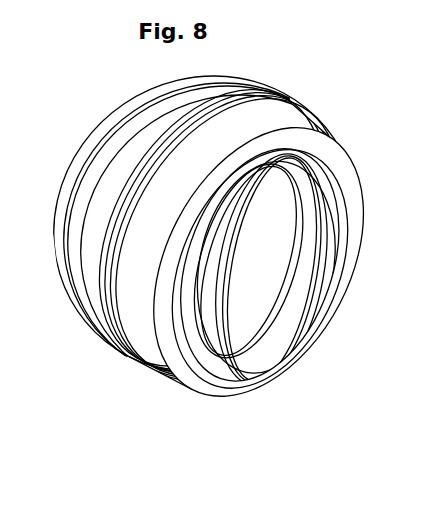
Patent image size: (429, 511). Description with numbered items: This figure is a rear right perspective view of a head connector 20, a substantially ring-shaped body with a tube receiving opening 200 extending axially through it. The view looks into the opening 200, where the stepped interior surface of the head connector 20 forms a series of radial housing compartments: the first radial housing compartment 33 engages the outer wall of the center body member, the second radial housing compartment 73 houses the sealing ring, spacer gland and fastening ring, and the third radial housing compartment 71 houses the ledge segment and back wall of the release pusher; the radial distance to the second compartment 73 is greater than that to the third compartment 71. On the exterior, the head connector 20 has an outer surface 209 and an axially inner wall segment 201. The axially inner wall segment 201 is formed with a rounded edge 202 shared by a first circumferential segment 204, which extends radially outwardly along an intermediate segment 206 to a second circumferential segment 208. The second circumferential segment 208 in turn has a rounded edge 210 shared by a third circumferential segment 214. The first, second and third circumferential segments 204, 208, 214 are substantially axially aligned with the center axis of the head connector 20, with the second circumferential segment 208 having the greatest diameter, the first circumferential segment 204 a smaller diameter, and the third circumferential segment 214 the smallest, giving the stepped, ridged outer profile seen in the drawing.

The head connector 20 is at (302, 74).
The first radial housing compartment 33 is at (323, 300).
The third radial housing compartment 71 is at (230, 230).
The second radial housing compartment 73 is at (275, 245).
The tube receiving opening 200 is at (220, 315).
The axially inner wall segment 201 is at (208, 375).
The rounded edge 202 is at (183, 380).
The first circumferential segment 204 is at (140, 357).
The intermediate segment 206 is at (112, 330).
The second circumferential segment 208 is at (91, 300).
The outer surface 209 is at (72, 412).
The rounded edge 210 is at (65, 287).
The third circumferential segment 214 is at (88, 150).